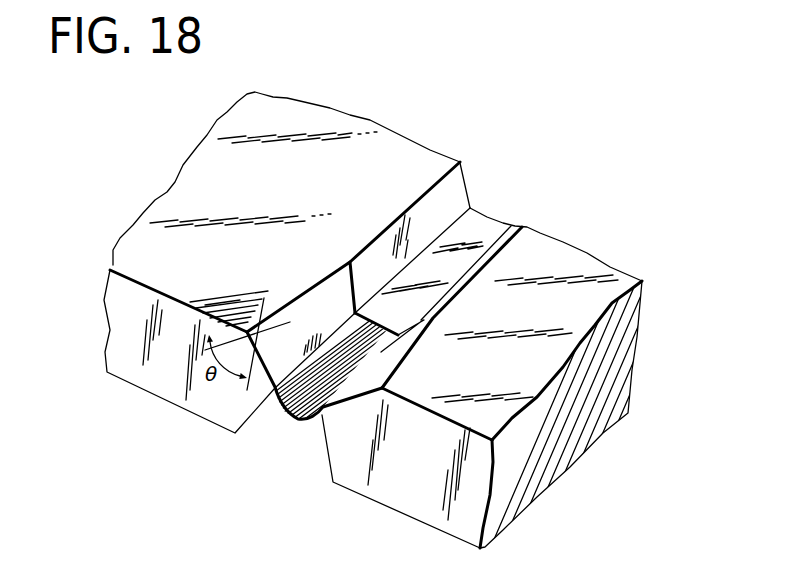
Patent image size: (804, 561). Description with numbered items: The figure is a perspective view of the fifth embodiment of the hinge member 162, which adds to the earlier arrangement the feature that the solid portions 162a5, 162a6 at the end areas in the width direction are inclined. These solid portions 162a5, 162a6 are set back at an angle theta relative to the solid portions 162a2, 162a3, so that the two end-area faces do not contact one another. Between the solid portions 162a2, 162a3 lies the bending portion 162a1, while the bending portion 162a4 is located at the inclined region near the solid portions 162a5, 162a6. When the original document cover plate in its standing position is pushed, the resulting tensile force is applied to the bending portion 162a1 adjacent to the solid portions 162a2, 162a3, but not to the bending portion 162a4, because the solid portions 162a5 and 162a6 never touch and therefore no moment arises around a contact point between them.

The hinge member 162 is at (509, 384).
The bending portion 162a1 is at (485, 231).
The solid portion 162a2 is at (373, 262).
The solid portion 162a3 is at (518, 225).
The bending portion 162a4 is at (297, 398).
The solid portion 162a5 is at (300, 330).
The solid portion 162a6 is at (393, 368).